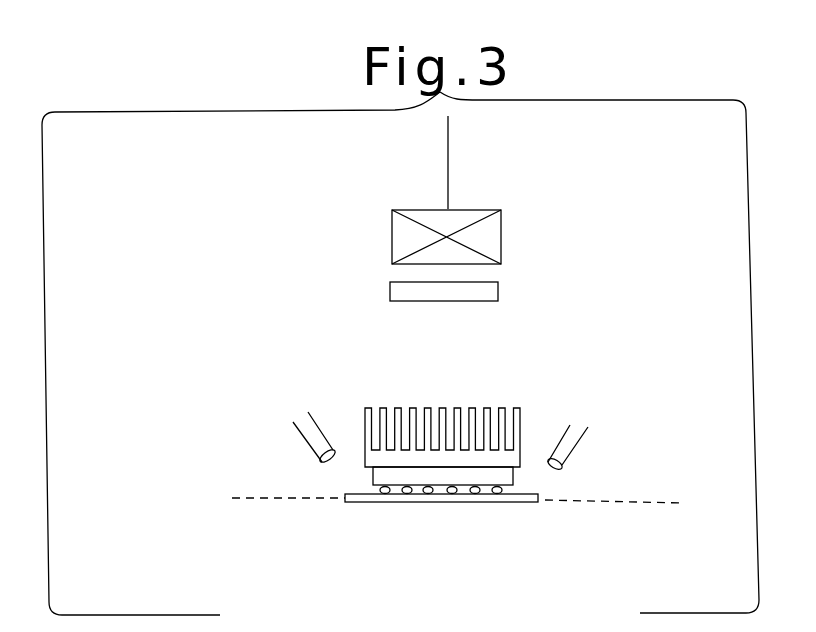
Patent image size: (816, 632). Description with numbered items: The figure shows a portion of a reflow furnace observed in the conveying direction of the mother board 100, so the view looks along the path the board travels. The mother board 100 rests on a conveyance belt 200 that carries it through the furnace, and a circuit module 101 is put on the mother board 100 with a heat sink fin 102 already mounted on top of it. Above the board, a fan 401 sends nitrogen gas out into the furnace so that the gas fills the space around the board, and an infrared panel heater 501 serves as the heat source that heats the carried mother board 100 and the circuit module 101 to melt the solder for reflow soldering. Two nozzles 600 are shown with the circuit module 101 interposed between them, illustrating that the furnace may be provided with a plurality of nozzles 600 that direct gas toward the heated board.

The mother board 100 is at (350, 494).
The circuit module 101 is at (465, 473).
The heat sink fin 102 is at (450, 417).
The conveyance belt 200 is at (240, 493).
The fan 401 is at (502, 235).
The infrared panel heater 501 is at (498, 294).
The nozzle 600 is at (343, 463).